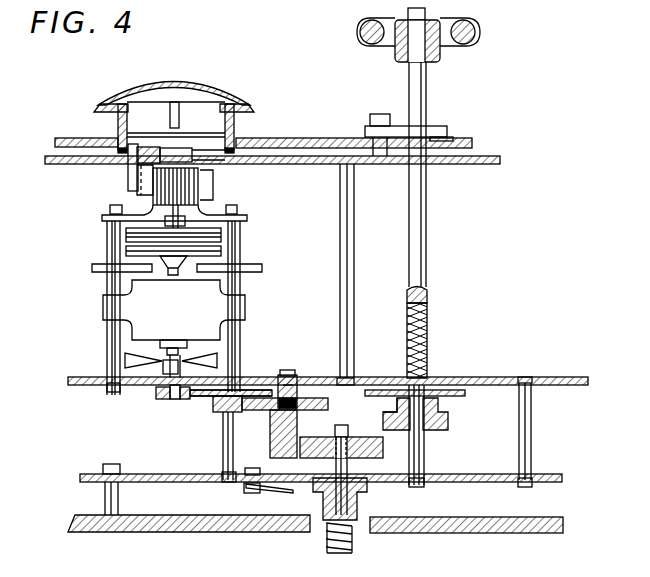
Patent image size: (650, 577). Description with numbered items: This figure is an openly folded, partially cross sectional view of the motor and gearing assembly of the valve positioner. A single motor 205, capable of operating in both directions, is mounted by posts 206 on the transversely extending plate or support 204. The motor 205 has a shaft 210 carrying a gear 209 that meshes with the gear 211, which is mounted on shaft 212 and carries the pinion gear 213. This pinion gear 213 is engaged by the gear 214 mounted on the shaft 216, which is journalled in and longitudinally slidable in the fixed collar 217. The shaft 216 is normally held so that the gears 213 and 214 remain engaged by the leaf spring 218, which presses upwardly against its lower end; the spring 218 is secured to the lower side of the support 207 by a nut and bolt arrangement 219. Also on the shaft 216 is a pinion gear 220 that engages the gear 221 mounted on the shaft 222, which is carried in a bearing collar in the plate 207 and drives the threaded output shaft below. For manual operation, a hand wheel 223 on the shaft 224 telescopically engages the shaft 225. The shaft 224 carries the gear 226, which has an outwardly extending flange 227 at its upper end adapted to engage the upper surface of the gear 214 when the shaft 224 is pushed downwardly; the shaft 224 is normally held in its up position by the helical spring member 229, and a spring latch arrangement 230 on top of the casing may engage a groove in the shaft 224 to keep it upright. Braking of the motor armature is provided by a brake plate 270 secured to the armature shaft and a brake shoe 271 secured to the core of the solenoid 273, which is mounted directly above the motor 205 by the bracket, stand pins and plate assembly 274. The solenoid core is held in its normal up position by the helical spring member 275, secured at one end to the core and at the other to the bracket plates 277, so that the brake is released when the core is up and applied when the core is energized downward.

The transversely extending plate or support 204 is at (316, 377).
The motor 205 is at (209, 298).
The posts 206 is at (107, 345).
The support 207 is at (160, 474).
The gear 209 is at (156, 393).
The shaft 210 is at (174, 362).
The gear 211 is at (206, 398).
The shaft 212 is at (223, 443).
The pinion gear 213 is at (236, 412).
The gear 214 is at (300, 395).
The shaft 216 is at (281, 370).
The fixed collar 217 is at (296, 370).
The leaf spring 218 is at (282, 492).
The nut and bolt arrangement 219 is at (248, 493).
The pinion gear 220 is at (290, 431).
The gear 221 is at (328, 458).
The shaft 222 is at (347, 467).
The hand wheel 223 is at (357, 31).
The shaft 224 is at (409, 82).
The shaft 225 is at (418, 445).
The gear 226 is at (448, 421).
The outwardly extending flange 227 is at (388, 402).
The helical spring member 229 is at (407, 325).
The spring latch arrangement 230 is at (398, 126).
The brake plate 270 is at (205, 251).
The brake shoe 271 is at (205, 235).
The solenoid 273 is at (185, 190).
The bracket, stand pins and plate assembly 274 is at (152, 195).
The helical spring member 275 is at (147, 147).
The bracket plates 277 is at (128, 176).